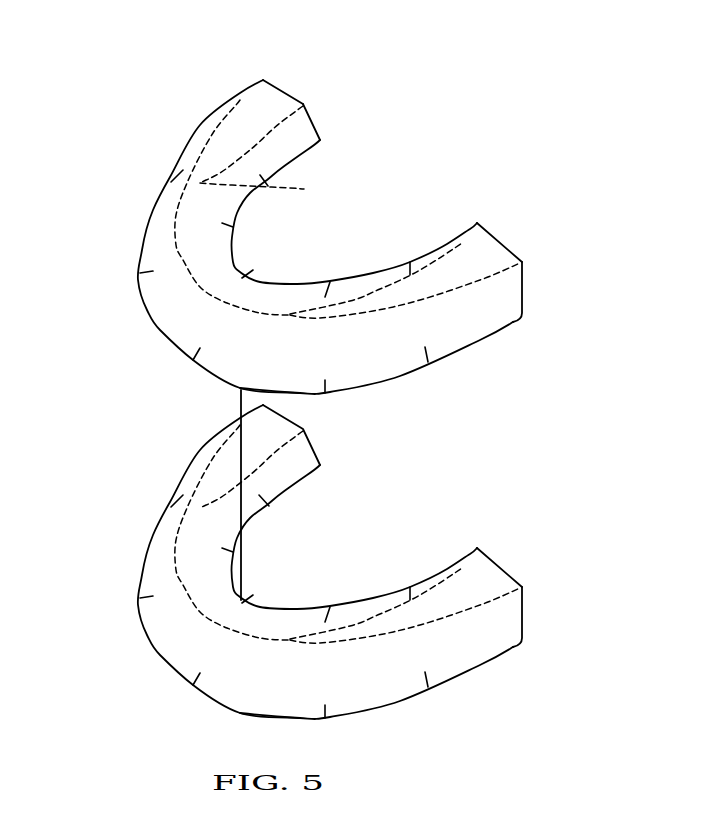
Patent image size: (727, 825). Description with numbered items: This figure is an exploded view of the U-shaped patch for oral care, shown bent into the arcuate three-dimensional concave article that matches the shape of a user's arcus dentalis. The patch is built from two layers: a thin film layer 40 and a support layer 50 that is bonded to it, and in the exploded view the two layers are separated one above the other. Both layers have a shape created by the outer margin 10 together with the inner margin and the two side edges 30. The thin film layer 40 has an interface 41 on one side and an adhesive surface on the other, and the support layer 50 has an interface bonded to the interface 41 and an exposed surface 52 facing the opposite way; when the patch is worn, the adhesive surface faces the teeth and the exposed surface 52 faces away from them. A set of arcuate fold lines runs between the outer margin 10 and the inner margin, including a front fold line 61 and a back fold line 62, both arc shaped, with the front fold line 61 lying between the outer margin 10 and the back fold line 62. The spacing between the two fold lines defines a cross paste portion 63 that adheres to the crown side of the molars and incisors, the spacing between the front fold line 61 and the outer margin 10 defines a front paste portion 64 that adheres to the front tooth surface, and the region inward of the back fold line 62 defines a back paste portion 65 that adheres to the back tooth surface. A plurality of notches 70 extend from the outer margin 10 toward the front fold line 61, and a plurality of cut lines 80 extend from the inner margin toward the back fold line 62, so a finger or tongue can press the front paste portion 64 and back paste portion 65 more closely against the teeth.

The outer margin 10 is at (342, 236).
The side edges 30 is at (279, 88).
The thin film layer 40 is at (308, 561).
The interface 41 is at (488, 572).
The support layer 50 is at (197, 123).
The exposed surface 52 is at (497, 272).
The front fold line 61 is at (183, 171).
The back fold line 62 is at (264, 191).
The cross paste portion 63 is at (487, 247).
The front paste portion 64 is at (495, 313).
The back paste portion 65 is at (297, 133).
The notches 70 is at (428, 355).
The cut lines 80 is at (242, 263).